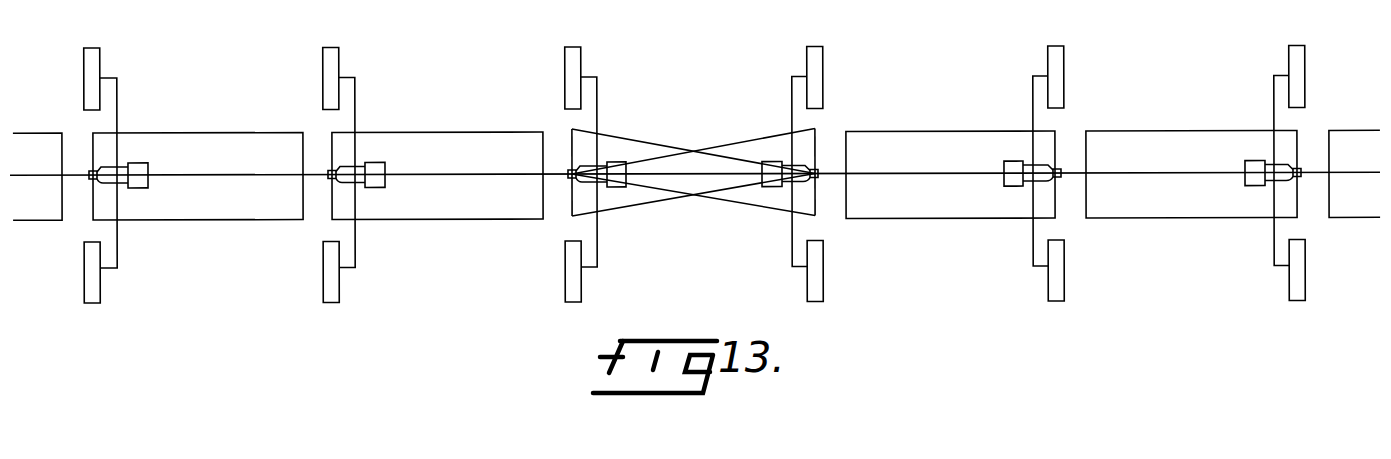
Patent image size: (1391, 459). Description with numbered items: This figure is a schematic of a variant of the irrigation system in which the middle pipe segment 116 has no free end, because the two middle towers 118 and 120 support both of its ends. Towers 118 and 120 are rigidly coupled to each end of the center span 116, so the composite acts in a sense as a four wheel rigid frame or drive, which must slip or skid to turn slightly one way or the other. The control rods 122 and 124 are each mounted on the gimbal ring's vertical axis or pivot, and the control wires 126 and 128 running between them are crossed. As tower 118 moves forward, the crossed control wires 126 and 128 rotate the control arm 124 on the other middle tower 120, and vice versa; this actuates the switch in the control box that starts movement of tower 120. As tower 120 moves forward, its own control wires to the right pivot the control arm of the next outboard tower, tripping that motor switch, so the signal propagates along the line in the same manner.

The middle pipe segment 116 is at (645, 172).
The middle tower 118 is at (598, 77).
The middle tower 120 is at (794, 76).
The control rod 122 is at (571, 215).
The control rod 124 is at (816, 131).
The control wire 126 is at (760, 140).
The control wire 128 is at (748, 208).